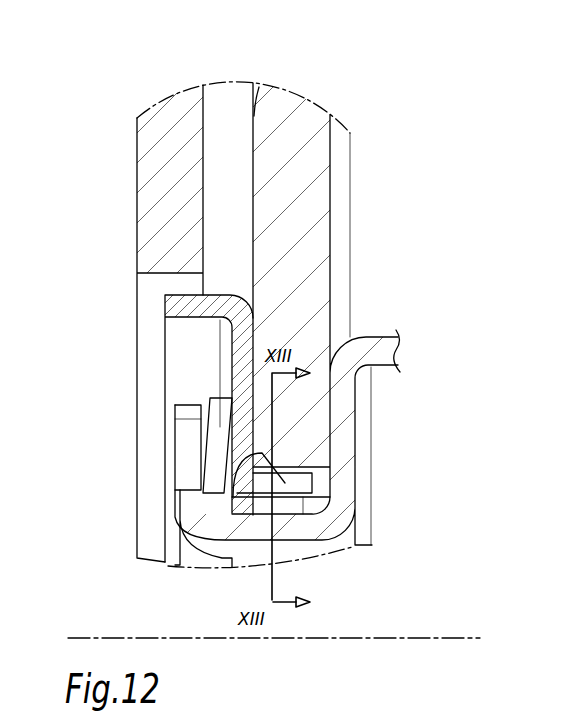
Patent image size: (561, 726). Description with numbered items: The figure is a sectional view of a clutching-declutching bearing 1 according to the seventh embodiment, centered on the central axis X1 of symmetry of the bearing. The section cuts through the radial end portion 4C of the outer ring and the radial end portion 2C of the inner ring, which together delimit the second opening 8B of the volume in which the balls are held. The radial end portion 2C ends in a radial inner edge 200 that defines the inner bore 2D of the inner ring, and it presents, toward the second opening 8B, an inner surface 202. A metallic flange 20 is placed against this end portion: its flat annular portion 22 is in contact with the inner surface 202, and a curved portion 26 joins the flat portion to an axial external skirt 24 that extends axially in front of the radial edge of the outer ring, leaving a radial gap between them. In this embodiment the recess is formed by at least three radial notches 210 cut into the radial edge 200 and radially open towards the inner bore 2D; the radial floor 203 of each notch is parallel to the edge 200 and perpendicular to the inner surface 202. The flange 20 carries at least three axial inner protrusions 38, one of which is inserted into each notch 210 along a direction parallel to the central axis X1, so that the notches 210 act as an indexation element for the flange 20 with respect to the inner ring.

The second opening 8B is at (235, 138).
The radial end portion of the outer ring 4C is at (172, 187).
The radial end portion of the inner ring 2C is at (297, 194).
The bearing 1 is at (333, 277).
The inner surface 202 is at (252, 243).
The metallic flange 20 is at (38, 347).
The axial external skirt 24 is at (175, 307).
The curved portion 26 is at (230, 311).
The flat annular portion 22 is at (243, 410).
The axial inner protrusion 38 is at (255, 452).
The radial notch 210 is at (258, 497).
The radial floor 203 is at (325, 470).
The inner bore 2D is at (250, 546).
The radial inner edge 200 is at (309, 547).
The central axis X1 is at (287, 640).